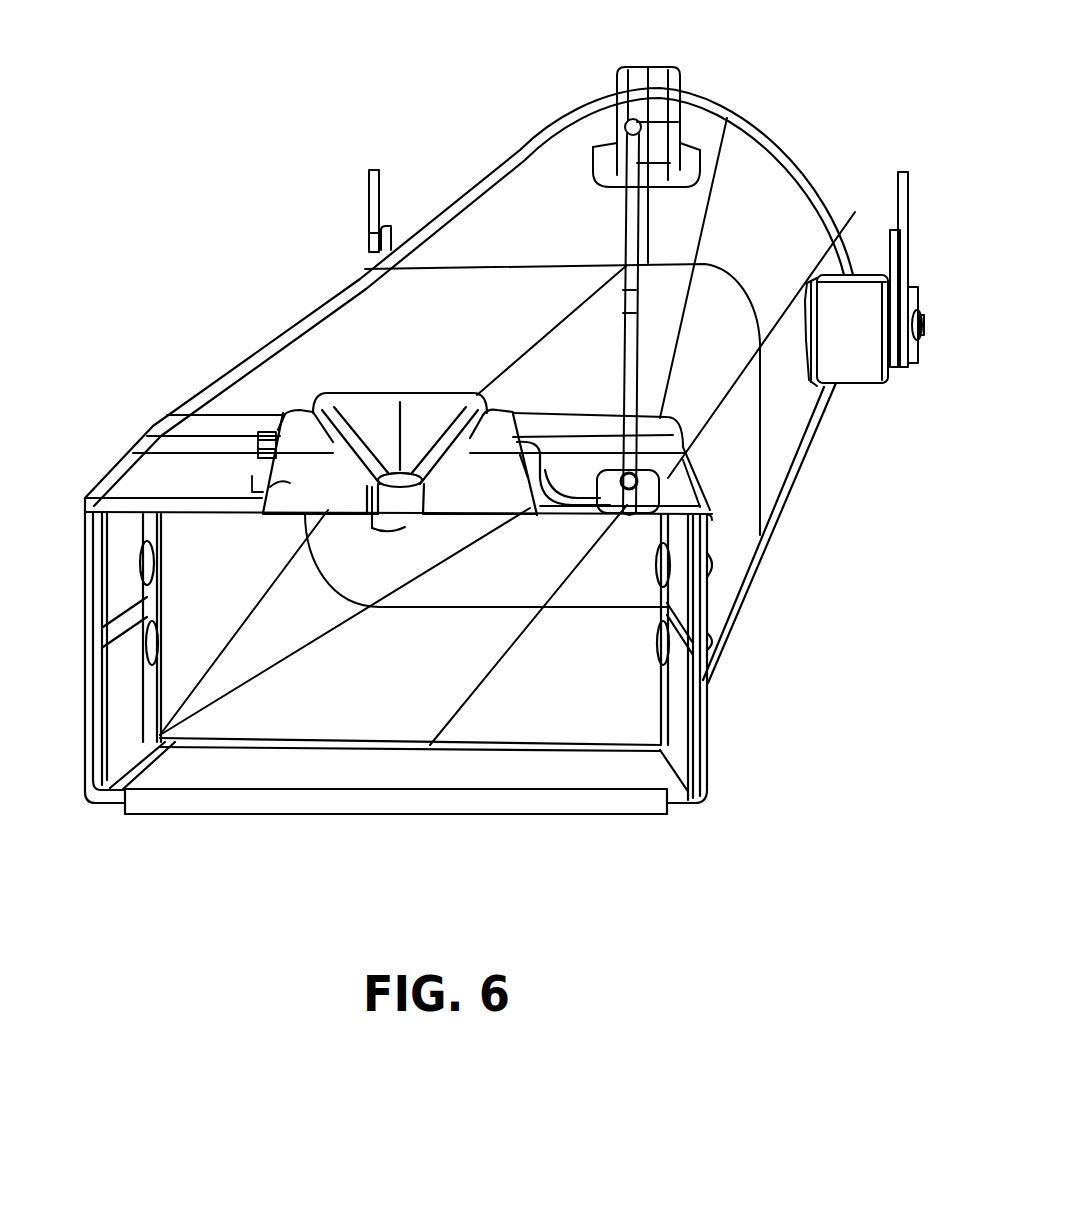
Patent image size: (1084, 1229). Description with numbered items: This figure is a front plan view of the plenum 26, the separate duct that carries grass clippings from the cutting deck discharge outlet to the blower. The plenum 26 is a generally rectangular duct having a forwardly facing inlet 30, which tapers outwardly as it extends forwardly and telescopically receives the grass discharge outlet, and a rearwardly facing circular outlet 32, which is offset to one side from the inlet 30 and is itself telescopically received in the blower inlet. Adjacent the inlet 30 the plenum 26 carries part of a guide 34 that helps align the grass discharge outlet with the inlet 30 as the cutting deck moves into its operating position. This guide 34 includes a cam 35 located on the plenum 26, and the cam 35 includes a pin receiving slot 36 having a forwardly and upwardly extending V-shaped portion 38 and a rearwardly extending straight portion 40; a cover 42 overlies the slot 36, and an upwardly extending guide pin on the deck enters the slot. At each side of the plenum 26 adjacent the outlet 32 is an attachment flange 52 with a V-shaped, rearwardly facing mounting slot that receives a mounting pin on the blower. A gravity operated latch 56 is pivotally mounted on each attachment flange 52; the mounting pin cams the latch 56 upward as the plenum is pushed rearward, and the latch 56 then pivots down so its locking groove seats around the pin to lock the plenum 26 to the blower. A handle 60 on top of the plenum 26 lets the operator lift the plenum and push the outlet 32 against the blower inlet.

The plenum 26 is at (403, 110).
The inlet 30 is at (677, 703).
The outlet 32 is at (748, 122).
The guide 34 is at (300, 372).
The cam 35 is at (290, 483).
The pin receiving slot 36 is at (340, 473).
The V-shaped portion 38 is at (443, 455).
The straight portion 40 is at (410, 507).
The cover 42 is at (360, 405).
The attachment flange 52 is at (390, 230).
The gravity operated latch 56 is at (367, 190).
The handle 60 is at (648, 62).